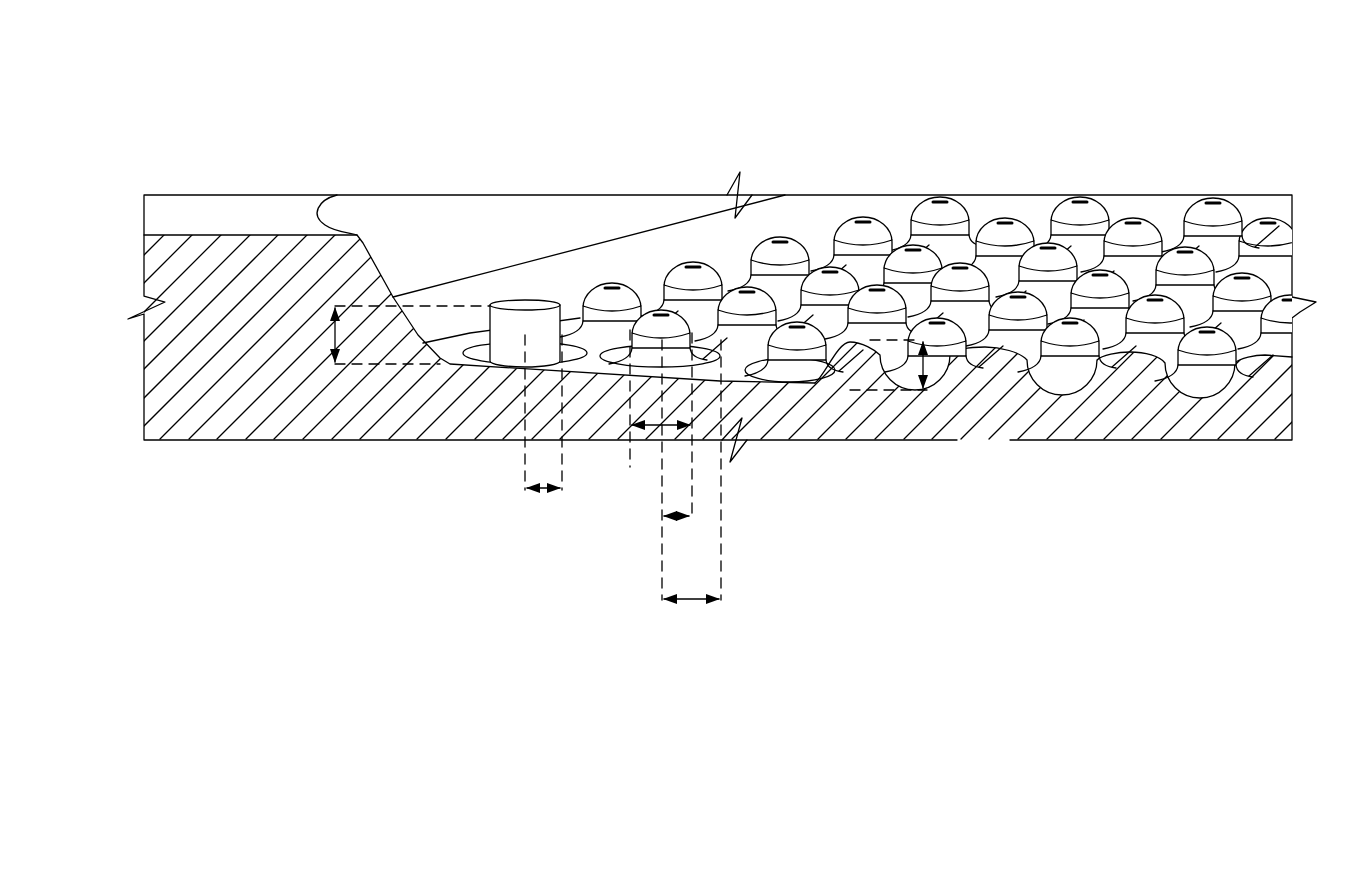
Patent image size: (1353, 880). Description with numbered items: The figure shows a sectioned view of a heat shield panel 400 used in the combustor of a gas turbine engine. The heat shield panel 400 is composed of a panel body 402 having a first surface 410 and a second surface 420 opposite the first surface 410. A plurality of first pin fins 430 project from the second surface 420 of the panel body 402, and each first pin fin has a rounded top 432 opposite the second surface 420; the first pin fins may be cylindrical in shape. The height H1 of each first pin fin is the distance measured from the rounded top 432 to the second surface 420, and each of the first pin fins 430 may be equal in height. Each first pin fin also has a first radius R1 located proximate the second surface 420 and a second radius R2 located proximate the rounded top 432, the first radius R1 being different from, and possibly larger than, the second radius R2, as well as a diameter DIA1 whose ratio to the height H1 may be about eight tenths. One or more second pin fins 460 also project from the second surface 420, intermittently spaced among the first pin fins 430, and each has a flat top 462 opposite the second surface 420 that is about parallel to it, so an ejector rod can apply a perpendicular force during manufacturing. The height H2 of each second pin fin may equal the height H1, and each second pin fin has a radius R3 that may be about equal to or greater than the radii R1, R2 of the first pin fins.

The heat shield panel 400 is at (275, 76).
The panel body 402 is at (1095, 430).
The first surface 410 is at (929, 503).
The second surface 420 is at (1264, 210).
The plurality of first pin fins 430 is at (963, 228).
The rounded top 432 is at (945, 192).
The second pin fins 460 is at (503, 347).
The flat top 462 is at (526, 303).
The height of first pin fins H1 is at (942, 358).
The height of second pin fins H2 is at (333, 335).
The diameter of first pin fins DIA1 is at (657, 428).
The first radius R1 is at (690, 602).
The second radius R2 is at (676, 518).
The radius of second pin fins R3 is at (545, 490).